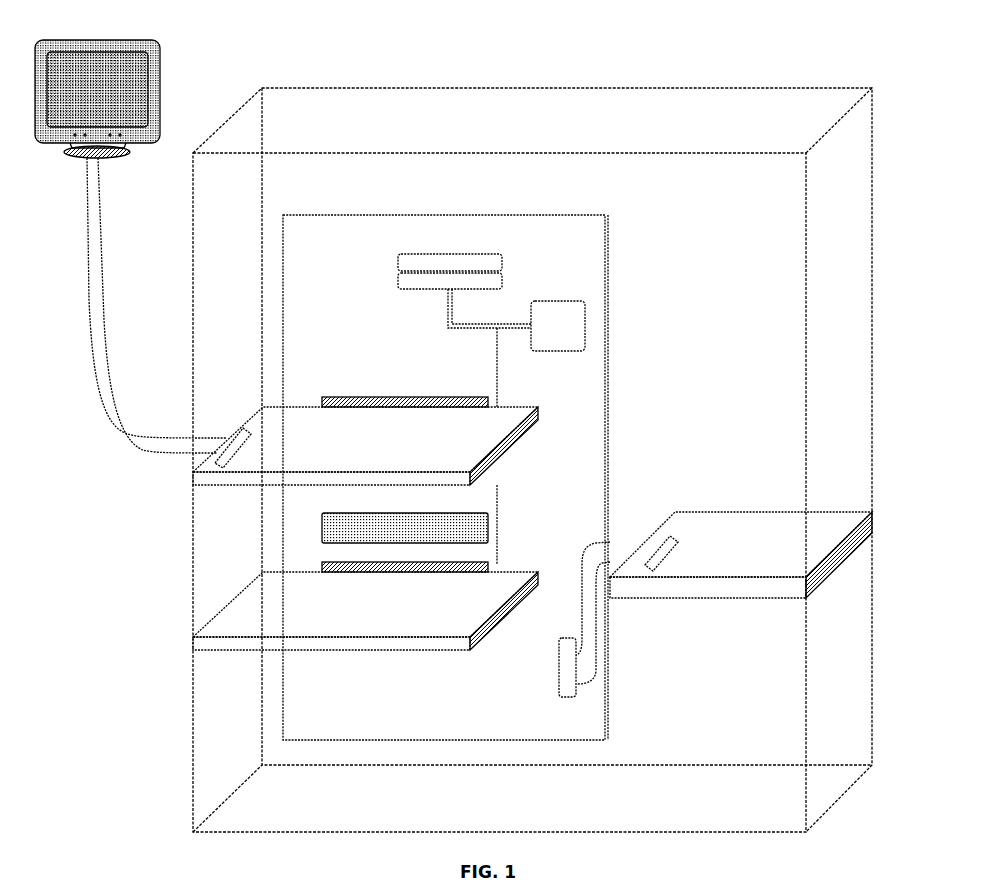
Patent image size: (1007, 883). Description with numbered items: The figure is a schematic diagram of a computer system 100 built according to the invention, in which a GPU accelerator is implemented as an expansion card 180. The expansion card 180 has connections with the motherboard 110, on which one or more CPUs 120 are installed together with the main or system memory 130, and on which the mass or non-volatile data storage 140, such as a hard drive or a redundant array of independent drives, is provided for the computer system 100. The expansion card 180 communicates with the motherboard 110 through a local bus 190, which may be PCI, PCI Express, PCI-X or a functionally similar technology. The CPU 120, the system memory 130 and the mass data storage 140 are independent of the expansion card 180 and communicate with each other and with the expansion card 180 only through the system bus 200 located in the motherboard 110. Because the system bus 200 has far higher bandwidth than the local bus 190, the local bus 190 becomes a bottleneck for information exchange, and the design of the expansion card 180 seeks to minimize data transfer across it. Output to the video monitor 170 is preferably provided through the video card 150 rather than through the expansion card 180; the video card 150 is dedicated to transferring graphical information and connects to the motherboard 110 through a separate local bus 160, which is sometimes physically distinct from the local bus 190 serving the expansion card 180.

The computer system 100 is at (850, 90).
The motherboard 110 is at (368, 218).
The CPU 120 is at (552, 310).
The system memory 130 is at (440, 260).
The mass data storage 140 is at (832, 522).
The video card 150 is at (285, 408).
The local bus 160 is at (397, 398).
The video monitor 170 is at (155, 62).
The expansion card 180 is at (210, 646).
The local bus 190 is at (330, 563).
The system bus 200 is at (447, 316).